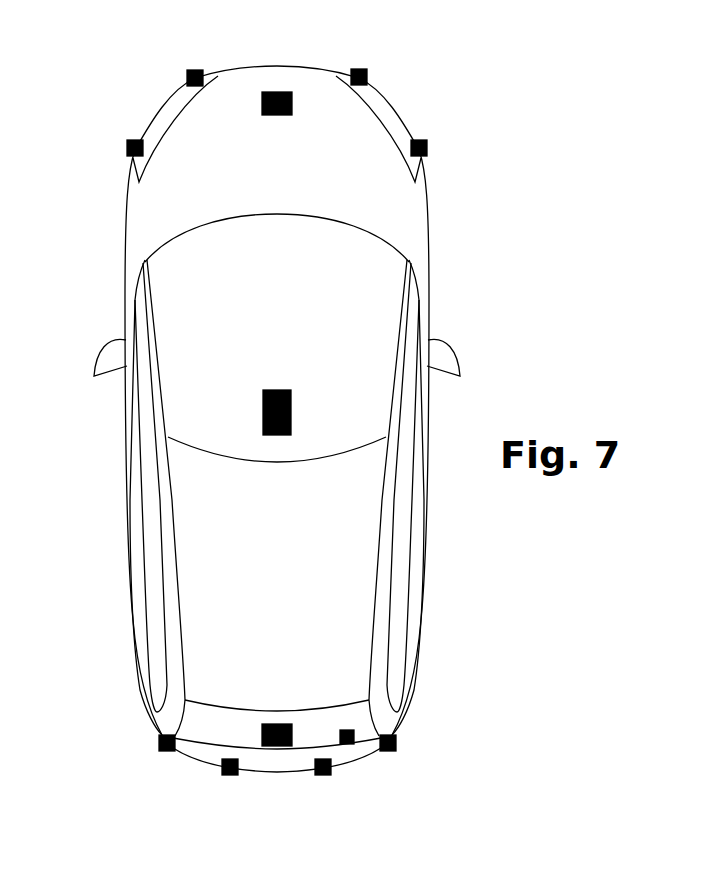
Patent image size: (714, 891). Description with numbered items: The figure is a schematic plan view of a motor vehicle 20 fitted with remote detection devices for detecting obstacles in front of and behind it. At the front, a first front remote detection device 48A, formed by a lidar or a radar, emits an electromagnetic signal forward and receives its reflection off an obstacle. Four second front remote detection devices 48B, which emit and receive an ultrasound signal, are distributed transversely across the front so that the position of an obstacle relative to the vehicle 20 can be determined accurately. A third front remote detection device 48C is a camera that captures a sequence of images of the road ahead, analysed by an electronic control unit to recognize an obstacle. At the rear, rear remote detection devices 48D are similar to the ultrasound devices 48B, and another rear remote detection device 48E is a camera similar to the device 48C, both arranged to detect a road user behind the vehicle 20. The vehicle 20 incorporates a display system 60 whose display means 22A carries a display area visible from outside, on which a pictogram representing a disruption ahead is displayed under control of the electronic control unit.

The vehicle 20 is at (93, 197).
The display means 22A is at (349, 730).
The first front remote detection device 48A is at (282, 92).
The second front remote detection device 48B is at (188, 76).
The third front remote detection device 48C is at (291, 407).
The rear remote detection devices 48D is at (168, 752).
The rear remote detection device 48E is at (276, 724).
The display system 60 is at (318, 175).